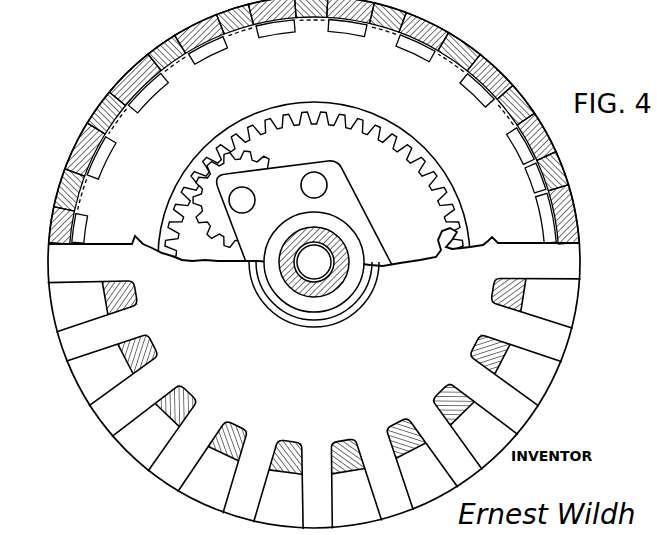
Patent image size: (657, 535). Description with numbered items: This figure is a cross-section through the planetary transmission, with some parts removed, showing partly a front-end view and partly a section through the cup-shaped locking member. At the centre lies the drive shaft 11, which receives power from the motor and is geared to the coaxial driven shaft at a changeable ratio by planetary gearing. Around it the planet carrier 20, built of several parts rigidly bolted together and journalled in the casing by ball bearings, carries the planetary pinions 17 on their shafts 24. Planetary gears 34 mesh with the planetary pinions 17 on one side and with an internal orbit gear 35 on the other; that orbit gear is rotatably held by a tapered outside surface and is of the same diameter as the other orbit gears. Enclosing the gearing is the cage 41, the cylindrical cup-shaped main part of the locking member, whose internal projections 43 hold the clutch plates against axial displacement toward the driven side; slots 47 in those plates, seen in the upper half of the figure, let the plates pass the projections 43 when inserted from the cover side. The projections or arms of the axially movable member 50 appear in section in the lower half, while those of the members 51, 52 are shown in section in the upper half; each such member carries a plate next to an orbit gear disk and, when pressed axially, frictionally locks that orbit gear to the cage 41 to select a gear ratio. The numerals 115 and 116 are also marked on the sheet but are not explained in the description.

The drive shaft 11 is at (318, 268).
The planetary pinions 17 is at (327, 162).
The planet carrier 20 is at (343, 203).
The shafts of planetary pinions 24 is at (314, 183).
The planetary gears 34 is at (240, 160).
The internal orbit gear 35 is at (441, 208).
The cage 41 is at (100, 103).
The internal projections 43 is at (540, 182).
The slots 47 is at (547, 222).
The axially movable member 50 is at (100, 292).
The axially movable member 51 is at (130, 67).
The axially movable member 52 is at (87, 140).
The pole segment 115 is at (127, 32).
The pole segment 116 is at (174, 18).